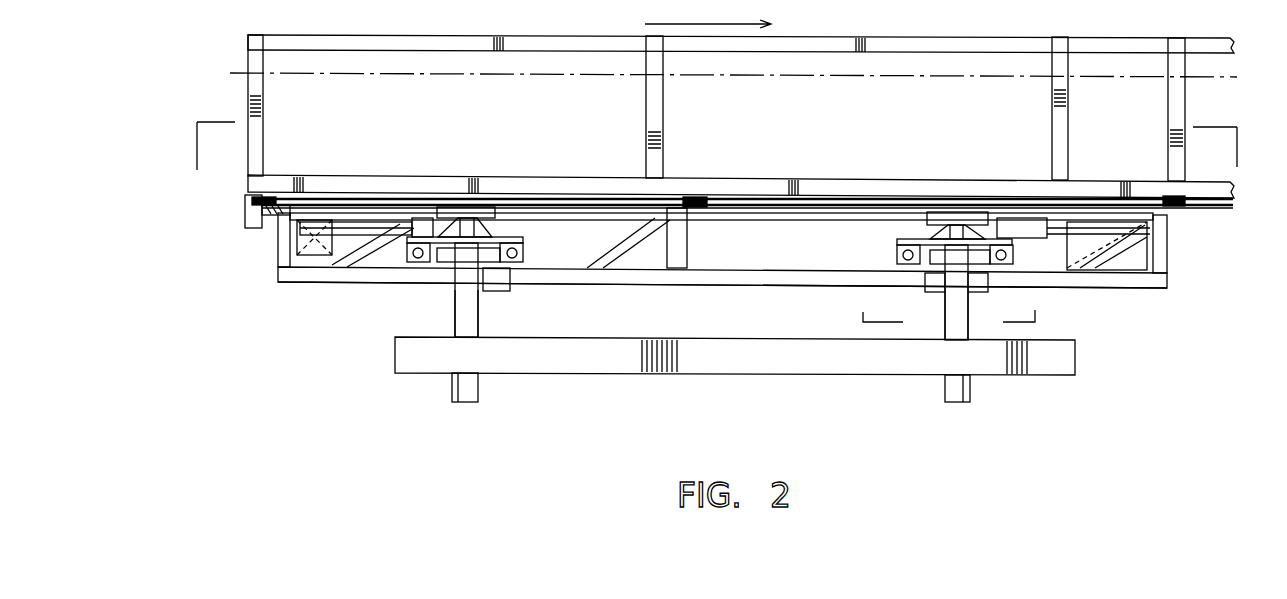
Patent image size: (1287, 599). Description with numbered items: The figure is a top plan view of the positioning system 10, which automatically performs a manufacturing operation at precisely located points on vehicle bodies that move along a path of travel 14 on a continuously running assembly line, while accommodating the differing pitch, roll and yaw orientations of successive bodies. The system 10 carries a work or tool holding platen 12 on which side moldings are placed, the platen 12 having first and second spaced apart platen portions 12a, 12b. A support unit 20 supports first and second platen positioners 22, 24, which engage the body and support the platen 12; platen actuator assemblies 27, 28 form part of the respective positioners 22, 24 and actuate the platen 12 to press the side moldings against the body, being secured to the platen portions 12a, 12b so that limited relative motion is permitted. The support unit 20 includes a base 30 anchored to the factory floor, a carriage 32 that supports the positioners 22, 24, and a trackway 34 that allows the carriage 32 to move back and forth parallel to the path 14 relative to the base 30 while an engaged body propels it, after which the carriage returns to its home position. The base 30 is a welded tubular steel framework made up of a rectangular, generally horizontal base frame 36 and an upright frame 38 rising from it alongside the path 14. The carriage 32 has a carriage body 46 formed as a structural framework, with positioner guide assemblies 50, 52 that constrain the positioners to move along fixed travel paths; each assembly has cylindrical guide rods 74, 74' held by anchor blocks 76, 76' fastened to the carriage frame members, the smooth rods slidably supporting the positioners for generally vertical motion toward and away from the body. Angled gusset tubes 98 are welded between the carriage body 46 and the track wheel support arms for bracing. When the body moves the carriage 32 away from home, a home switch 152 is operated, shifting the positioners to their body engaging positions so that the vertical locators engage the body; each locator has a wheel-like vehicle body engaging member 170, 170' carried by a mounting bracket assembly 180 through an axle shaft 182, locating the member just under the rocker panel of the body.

The positioning system 10 is at (733, 221).
The platen 12 is at (648, 374).
The first platen portion 12a is at (928, 365).
The second platen portion 12b is at (473, 360).
The path of travel 14 is at (480, 78).
The support unit 20 is at (1170, 265).
The first platen positioner 22 is at (1003, 278).
The second platen positioner 24 is at (505, 283).
The platen actuator assembly 27 is at (972, 397).
The platen actuator assembly 28 is at (453, 322).
The base 30 is at (247, 202).
The carriage 32 is at (793, 287).
The trackway 34 is at (1205, 210).
The base frame 36 is at (1190, 106).
The upright frame 38 is at (524, 180).
The carriage body 46 is at (1140, 288).
The positioner guide assembly 50 is at (532, 252).
The positioner guide assembly 52 is at (905, 245).
The guide rod 74 is at (930, 238).
The guide rod 74' is at (420, 282).
The anchor block 76 is at (1009, 292).
The anchor block 76' is at (491, 290).
The gusset tube 98 is at (345, 262).
The home switch 152 is at (300, 230).
The vehicle body engaging member 170 is at (984, 178).
The vehicle body engaging member 170' is at (501, 224).
The mounting bracket assembly 180 is at (917, 240).
The axle shaft 182 is at (957, 228).